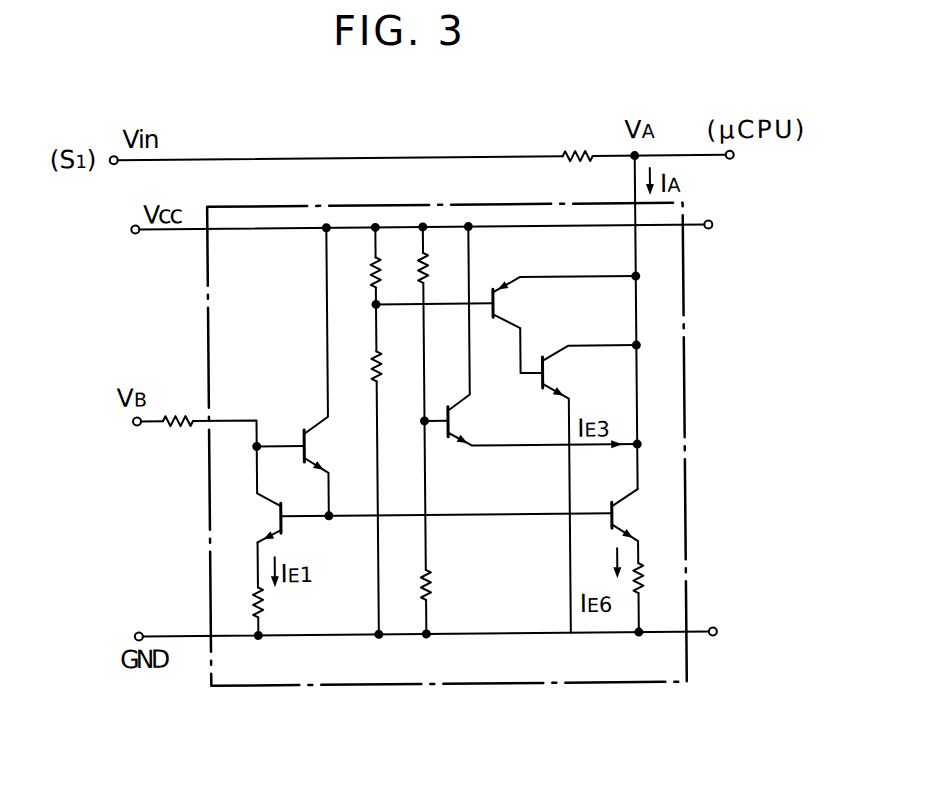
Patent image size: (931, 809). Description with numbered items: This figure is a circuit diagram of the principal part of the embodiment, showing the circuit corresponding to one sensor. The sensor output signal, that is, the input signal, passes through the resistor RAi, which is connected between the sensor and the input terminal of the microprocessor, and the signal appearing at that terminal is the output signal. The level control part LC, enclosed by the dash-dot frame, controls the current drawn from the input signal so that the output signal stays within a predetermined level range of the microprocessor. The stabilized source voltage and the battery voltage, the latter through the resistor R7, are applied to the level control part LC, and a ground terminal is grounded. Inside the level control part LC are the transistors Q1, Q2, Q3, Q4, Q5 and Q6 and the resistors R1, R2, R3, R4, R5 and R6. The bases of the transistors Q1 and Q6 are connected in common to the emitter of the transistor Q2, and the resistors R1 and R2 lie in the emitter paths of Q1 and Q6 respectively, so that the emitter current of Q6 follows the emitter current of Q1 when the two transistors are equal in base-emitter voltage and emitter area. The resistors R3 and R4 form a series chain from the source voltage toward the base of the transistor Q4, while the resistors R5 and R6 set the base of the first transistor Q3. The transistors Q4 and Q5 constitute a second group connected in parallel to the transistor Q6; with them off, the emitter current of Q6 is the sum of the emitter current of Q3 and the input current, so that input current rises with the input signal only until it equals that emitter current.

The resistor R1 is at (241, 588).
The resistor R2 is at (654, 583).
The resistor R3 is at (359, 265).
The resistor R4 is at (361, 469).
The resistor R5 is at (440, 324).
The resistor R6 is at (444, 527).
The resistor R7 is at (179, 404).
The resistor RAi is at (573, 137).
The transistor Q1 is at (237, 481).
The transistor Q2 is at (306, 372).
The transistor Q3 is at (530, 335).
The transistor Q4 is at (506, 325).
The transistor Q5 is at (590, 489).
The transistor Q6 is at (639, 515).
The level control part LC is at (575, 684).